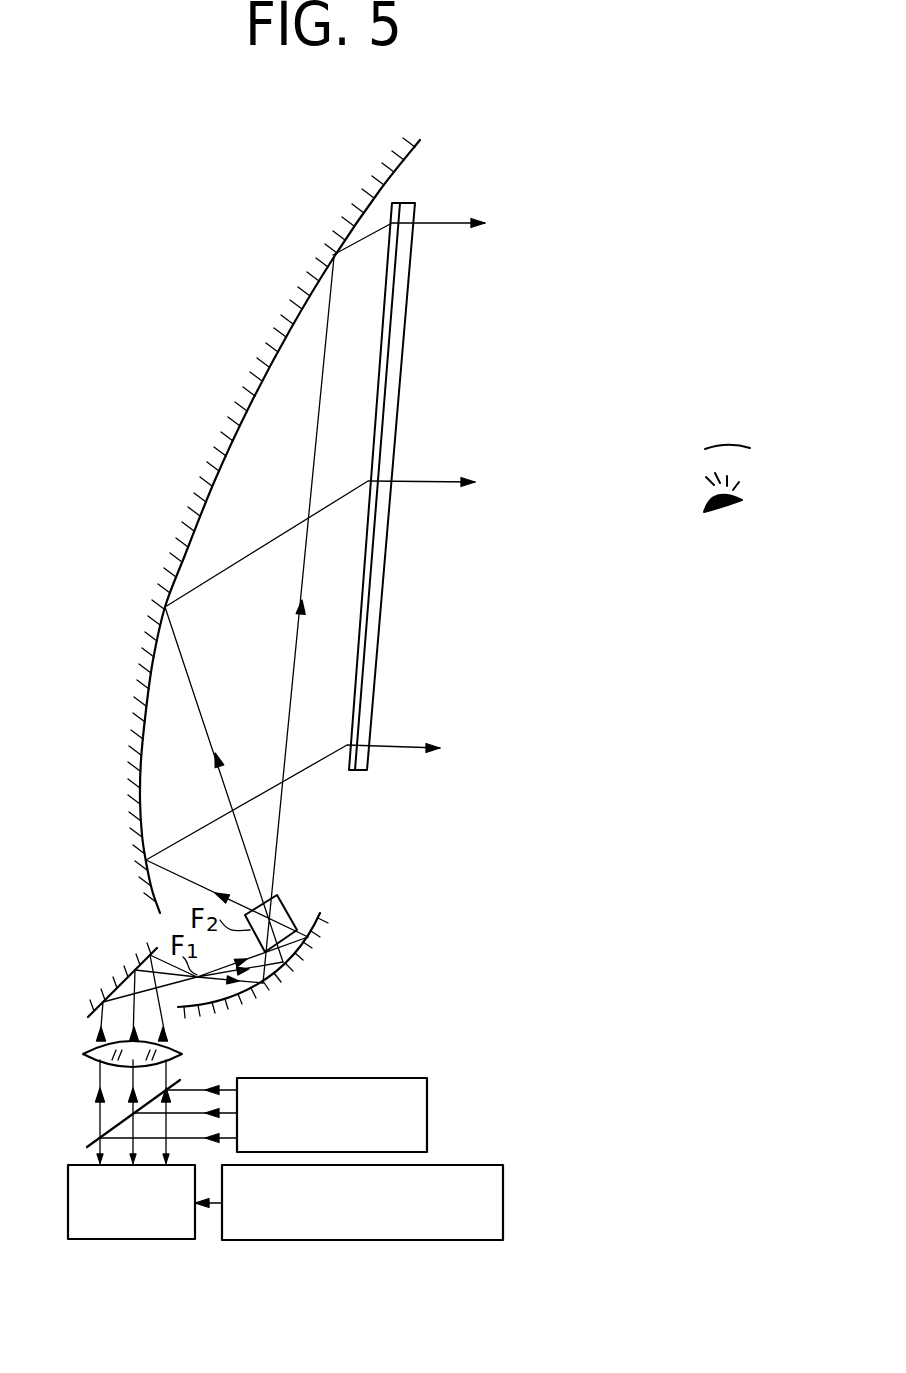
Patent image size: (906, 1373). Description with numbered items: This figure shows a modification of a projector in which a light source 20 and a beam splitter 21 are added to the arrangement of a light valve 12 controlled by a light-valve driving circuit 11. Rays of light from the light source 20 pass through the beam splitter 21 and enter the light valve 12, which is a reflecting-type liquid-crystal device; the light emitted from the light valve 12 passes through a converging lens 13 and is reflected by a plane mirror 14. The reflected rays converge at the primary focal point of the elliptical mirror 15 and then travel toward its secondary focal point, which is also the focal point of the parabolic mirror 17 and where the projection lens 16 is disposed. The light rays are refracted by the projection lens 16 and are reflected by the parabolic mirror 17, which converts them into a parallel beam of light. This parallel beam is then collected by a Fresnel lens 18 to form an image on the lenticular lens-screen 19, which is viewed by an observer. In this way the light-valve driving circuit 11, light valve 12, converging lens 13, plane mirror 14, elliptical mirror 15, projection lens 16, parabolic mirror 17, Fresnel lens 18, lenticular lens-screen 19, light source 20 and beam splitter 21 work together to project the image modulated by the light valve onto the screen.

The light-valve driving circuit 11 is at (503, 1188).
The light valve 12 is at (173, 1239).
The converging lens 13 is at (92, 1050).
The plane mirror 14 is at (138, 952).
The elliptical mirror 15 is at (310, 965).
The projection lens 16 is at (280, 902).
The parabolic mirror 17 is at (147, 693).
The Fresnel lens 18 is at (348, 777).
The lenticular lens-screen 19 is at (363, 773).
The light source 20 is at (427, 1103).
The beam splitter 21 is at (87, 1143).